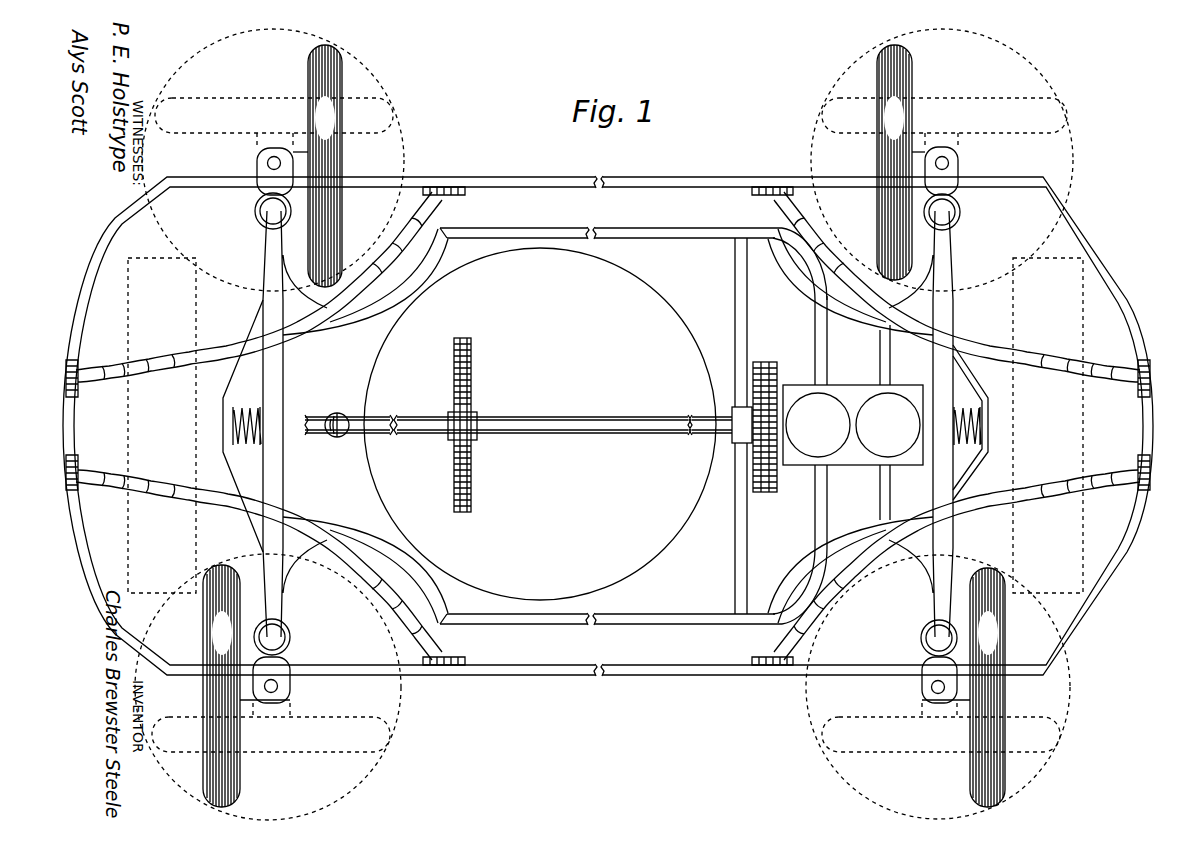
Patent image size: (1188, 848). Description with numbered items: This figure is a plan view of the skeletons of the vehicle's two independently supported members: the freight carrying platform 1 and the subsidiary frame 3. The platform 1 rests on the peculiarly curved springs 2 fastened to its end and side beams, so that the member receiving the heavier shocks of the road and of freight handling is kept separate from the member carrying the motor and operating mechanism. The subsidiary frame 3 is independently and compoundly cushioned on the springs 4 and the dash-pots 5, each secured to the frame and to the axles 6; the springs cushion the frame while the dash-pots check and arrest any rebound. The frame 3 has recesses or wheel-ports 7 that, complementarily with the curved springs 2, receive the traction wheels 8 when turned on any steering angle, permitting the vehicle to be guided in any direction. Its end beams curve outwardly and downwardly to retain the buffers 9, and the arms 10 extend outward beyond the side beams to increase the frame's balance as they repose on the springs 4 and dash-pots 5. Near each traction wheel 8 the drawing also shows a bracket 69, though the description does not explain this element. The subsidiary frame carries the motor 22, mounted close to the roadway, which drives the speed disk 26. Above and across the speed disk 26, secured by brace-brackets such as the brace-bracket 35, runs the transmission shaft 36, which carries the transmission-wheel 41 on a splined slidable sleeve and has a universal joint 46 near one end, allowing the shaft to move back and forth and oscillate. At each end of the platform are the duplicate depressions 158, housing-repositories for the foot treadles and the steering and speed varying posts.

The freight carrying platform 1 is at (606, 427).
The curved springs 2 is at (608, 426).
The subsidiary frame 3 is at (611, 424).
The springs 4 is at (256, 208).
The dash-pots 5 is at (264, 221).
The axles 6 is at (608, 424).
The wheel-ports 7 is at (608, 426).
The traction wheels 8 is at (604, 426).
The buffers 9 is at (233, 424).
The arms 10 is at (608, 424).
The motor 22 is at (853, 425).
The speed disk 26 is at (540, 424).
The brace-bracket 35 is at (754, 427).
The transmission shaft 36 is at (585, 434).
The transmission-wheel 41 is at (474, 470).
The universal joint 46 is at (338, 438).
The wheel bracket 69 is at (267, 164).
The depressions 158 is at (605, 425).